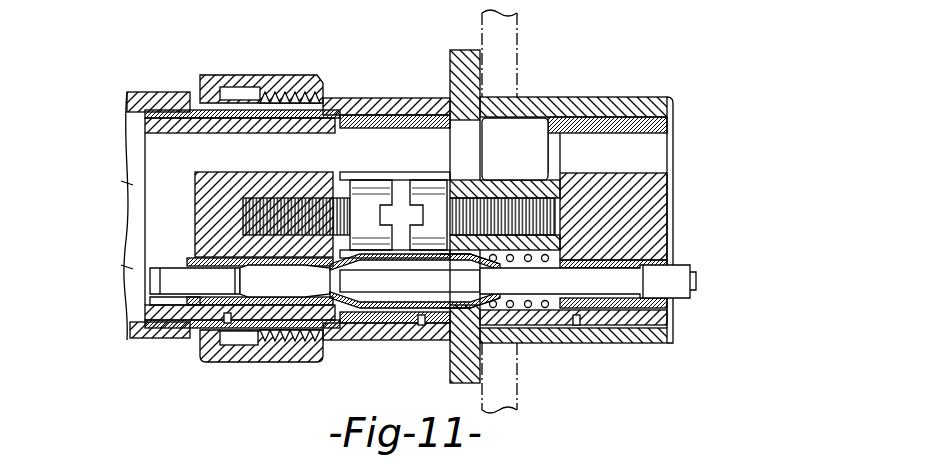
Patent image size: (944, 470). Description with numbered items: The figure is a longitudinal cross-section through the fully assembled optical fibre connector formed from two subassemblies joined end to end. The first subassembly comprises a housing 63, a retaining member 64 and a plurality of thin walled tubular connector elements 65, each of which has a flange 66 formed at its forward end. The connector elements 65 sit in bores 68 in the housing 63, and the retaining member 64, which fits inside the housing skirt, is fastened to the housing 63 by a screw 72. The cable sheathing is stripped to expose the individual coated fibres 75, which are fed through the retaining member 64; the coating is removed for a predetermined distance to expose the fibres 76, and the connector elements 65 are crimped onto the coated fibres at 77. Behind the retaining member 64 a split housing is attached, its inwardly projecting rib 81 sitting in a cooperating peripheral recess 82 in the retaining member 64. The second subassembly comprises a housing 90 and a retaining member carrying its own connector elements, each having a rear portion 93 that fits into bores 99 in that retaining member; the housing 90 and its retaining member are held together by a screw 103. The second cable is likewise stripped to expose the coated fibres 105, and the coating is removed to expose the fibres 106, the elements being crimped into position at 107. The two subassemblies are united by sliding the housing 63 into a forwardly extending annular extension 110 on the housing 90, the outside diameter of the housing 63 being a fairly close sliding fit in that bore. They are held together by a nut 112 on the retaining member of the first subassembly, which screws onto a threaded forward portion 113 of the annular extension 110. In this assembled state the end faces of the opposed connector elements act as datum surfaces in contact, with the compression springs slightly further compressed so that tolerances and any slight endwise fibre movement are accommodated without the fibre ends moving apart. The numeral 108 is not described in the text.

The housing 63 is at (367, 113).
The retaining member 64 is at (284, 127).
The tubular connector elements 65 is at (196, 323).
The flange 66 is at (338, 340).
The bores 68 is at (402, 128).
The screw 72 is at (370, 190).
The coated fibres 75 is at (155, 272).
The exposed fibres 76 is at (365, 300).
The crimp 77 is at (285, 281).
The inwardly projecting rib 81 is at (166, 338).
The peripheral recess 82 is at (185, 298).
The housing 90 is at (588, 103).
The rear portion 93 is at (632, 308).
The bores 99 is at (640, 128).
The screw 103 is at (422, 190).
The coated fibres 105 is at (692, 272).
The exposed fibres 106 is at (450, 337).
The crimp 107 is at (522, 300).
The locking ring 108 is at (508, 118).
The annular extension 110 is at (340, 100).
The nut 112 is at (208, 74).
The threaded forward portion 113 is at (250, 87).